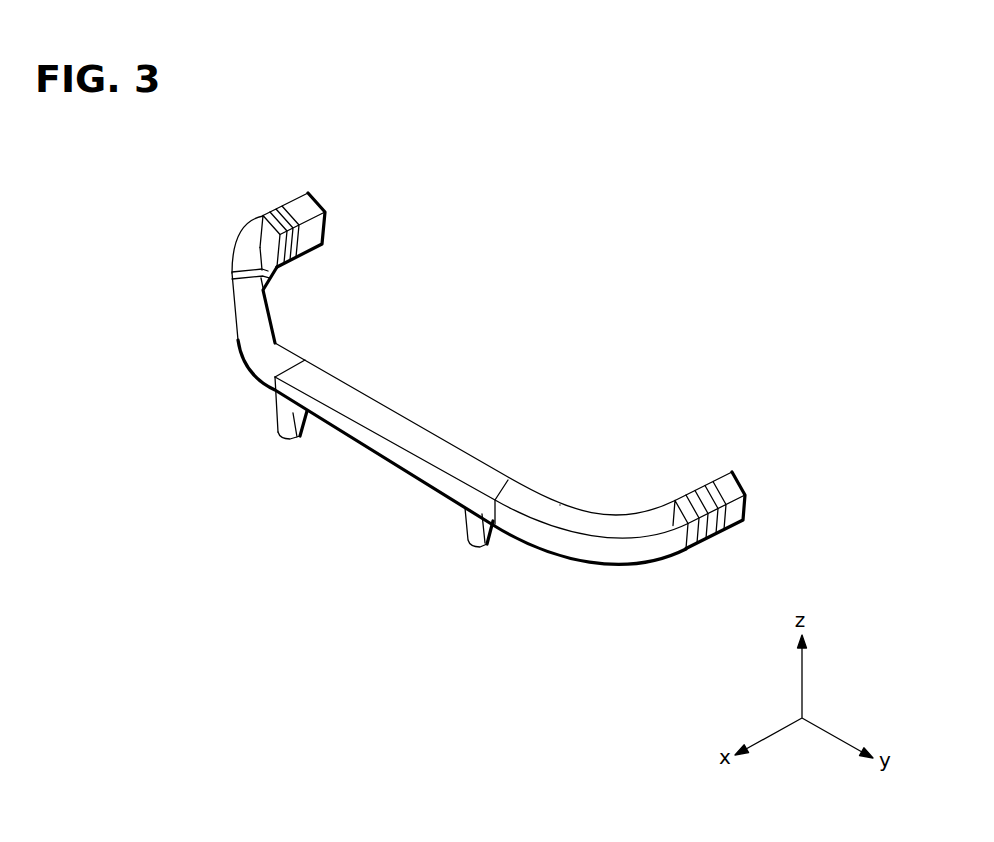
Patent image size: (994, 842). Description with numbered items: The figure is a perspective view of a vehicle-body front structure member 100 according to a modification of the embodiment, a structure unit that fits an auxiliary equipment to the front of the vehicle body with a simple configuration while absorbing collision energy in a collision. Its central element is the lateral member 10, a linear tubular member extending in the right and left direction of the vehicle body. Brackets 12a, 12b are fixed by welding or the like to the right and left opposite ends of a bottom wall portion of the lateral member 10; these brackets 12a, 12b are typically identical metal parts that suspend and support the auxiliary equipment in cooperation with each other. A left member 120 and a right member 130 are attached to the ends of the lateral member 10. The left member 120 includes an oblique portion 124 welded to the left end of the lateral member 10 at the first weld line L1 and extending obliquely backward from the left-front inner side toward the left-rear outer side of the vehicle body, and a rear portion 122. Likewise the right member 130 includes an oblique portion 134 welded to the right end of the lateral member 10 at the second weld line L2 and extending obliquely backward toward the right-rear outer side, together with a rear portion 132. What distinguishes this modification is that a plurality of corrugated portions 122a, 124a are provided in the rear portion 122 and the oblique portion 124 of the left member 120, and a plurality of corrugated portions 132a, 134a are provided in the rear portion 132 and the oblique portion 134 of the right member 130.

The vehicle-body front structure member 100 is at (451, 394).
The lateral member 10 is at (432, 456).
The bracket 12a is at (470, 530).
The bracket 12b is at (286, 412).
The left member 120 is at (672, 522).
The rear portion 122 is at (727, 483).
The corrugated portions 122a is at (709, 480).
The oblique portion 124 is at (593, 527).
The corrugated portions 124a is at (677, 493).
The right member 130 is at (256, 238).
The rear portion 132 is at (296, 202).
The corrugated portions 132a is at (262, 226).
The oblique portion 134 is at (250, 311).
The corrugated portions 134a is at (232, 280).
The first weld line L1 is at (500, 490).
The second weld line L2 is at (305, 361).